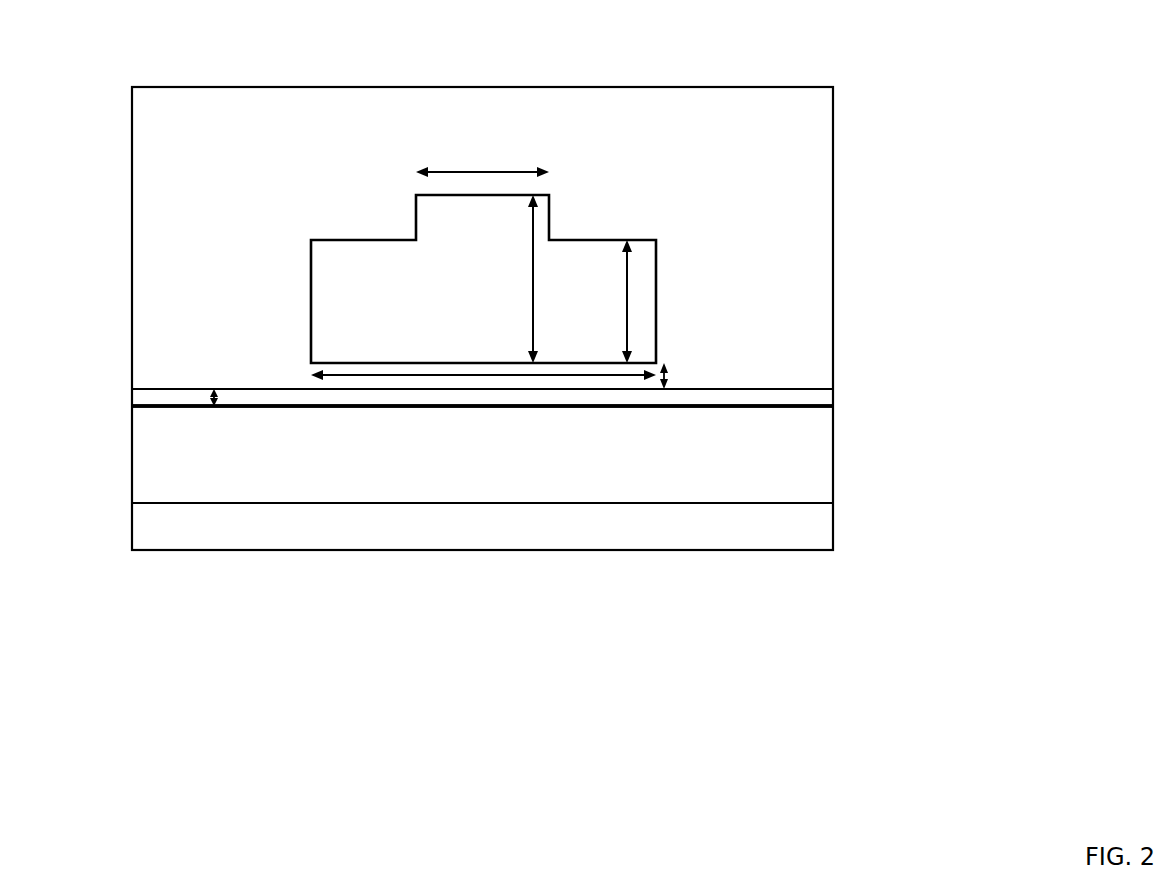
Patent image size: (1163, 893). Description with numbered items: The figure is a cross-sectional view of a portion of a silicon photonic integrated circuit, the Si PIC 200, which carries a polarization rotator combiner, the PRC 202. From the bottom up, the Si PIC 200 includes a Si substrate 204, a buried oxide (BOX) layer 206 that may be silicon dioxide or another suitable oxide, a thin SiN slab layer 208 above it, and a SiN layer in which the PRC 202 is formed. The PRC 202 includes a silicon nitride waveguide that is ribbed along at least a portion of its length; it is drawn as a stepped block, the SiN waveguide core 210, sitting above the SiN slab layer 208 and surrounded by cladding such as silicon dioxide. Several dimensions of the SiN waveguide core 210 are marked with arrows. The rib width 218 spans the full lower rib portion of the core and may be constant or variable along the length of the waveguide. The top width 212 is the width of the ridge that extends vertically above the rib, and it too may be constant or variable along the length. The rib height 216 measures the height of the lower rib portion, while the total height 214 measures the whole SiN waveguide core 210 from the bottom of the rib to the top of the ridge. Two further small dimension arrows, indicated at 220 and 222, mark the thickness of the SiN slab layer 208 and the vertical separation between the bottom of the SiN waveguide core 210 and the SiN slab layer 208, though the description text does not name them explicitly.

The Si PIC 200 is at (292, 52).
The PRC 202 is at (325, 180).
The Si substrate 204 is at (499, 537).
The buried oxide (BOX) layer 206 is at (499, 465).
The SiN slab layer 208 is at (146, 388).
The SiN waveguide core 210 is at (499, 312).
The top width 212 is at (480, 162).
The total height 214 is at (520, 264).
The rib height 216 is at (645, 302).
The rib width 218 is at (370, 362).
The layer thickness 220 is at (230, 392).
The gap distance 222 is at (680, 377).